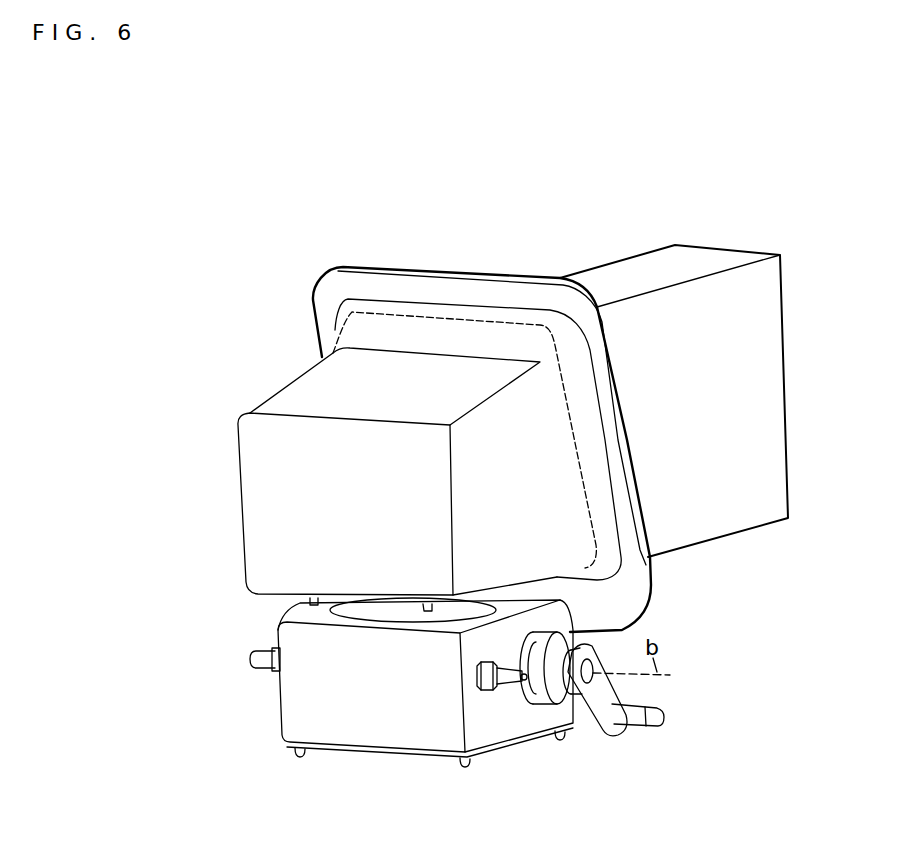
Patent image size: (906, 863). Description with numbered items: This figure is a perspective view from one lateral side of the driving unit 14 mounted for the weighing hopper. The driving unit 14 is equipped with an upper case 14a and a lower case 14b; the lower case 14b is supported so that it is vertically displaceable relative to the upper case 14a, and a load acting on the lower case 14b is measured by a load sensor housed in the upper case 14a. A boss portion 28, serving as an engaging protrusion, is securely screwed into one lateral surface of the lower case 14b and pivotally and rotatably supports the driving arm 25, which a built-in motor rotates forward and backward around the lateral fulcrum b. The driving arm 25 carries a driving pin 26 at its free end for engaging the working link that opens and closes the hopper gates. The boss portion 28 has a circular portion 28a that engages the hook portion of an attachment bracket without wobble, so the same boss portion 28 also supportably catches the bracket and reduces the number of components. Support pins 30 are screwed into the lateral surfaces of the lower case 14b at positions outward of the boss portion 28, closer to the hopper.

The driving unit 14 is at (381, 268).
The upper case 14a is at (278, 400).
The lower case 14b is at (363, 737).
The driving arm 25 is at (620, 730).
The driving pin 26 is at (637, 717).
The boss portion 28 is at (542, 698).
The circular portion 28a is at (578, 722).
The support pin 30 is at (262, 670).